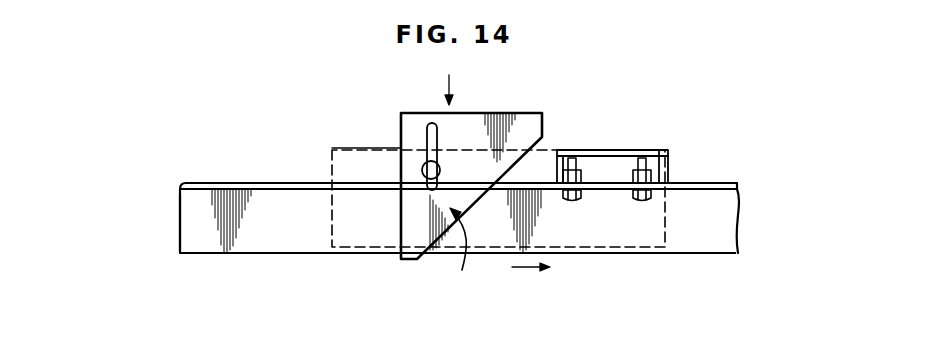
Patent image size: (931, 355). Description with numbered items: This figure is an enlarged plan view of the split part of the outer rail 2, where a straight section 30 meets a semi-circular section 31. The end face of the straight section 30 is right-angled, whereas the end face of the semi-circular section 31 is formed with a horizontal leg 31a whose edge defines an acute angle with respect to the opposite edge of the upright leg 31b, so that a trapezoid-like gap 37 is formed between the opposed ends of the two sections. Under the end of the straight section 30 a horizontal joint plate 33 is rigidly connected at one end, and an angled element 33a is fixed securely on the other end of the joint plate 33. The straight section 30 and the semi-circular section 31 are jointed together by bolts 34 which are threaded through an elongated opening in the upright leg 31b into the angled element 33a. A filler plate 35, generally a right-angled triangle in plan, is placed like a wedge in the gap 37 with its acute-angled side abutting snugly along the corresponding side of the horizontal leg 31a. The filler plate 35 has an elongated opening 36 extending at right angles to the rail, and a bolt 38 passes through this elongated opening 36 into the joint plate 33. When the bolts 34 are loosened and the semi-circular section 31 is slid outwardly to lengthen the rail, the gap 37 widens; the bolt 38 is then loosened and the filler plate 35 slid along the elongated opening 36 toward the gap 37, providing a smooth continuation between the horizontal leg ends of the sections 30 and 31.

The outer rail 2 is at (178, 218).
The straight section 30 is at (273, 183).
The semi-circular section 31 is at (712, 254).
The horizontal leg 31a is at (680, 252).
The upright leg 31b is at (716, 184).
The horizontal joint plate 33 is at (347, 150).
The angled element 33a is at (666, 150).
The bolts 34 is at (573, 158).
The filler plate 35 is at (512, 114).
The elongated opening 36 is at (431, 123).
The gap 37 is at (462, 252).
The bolt 38 is at (422, 165).